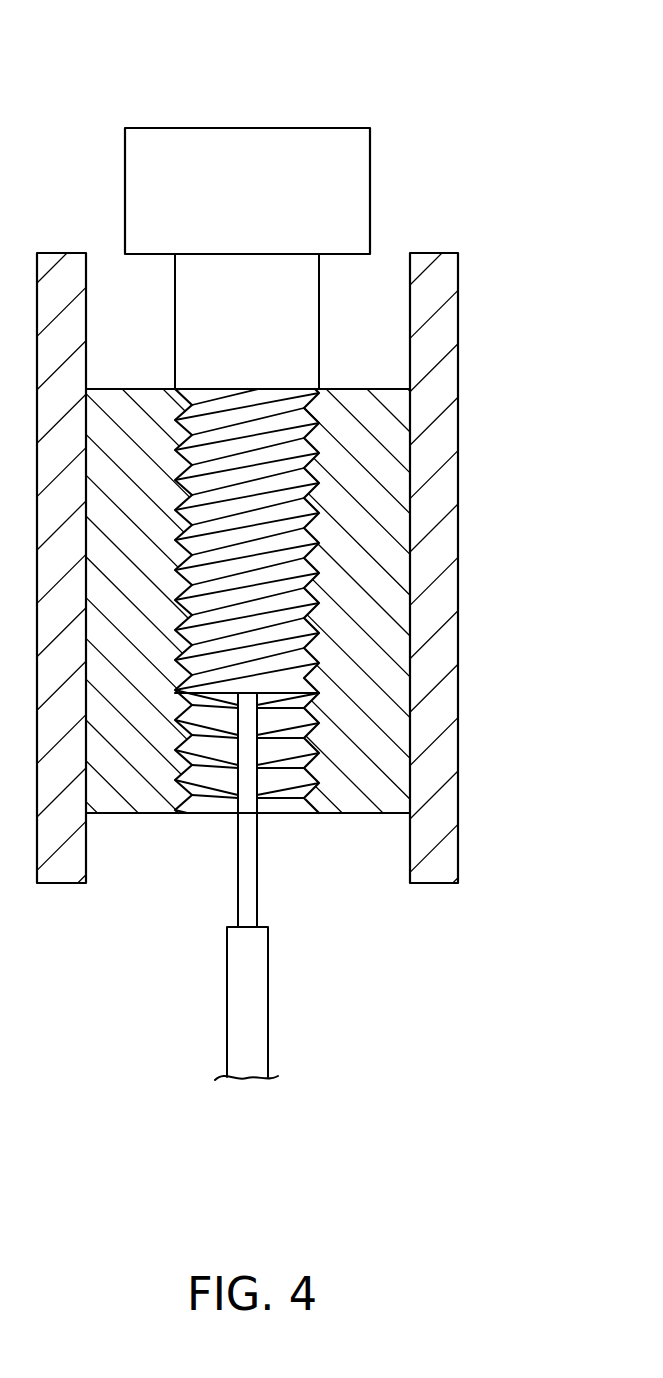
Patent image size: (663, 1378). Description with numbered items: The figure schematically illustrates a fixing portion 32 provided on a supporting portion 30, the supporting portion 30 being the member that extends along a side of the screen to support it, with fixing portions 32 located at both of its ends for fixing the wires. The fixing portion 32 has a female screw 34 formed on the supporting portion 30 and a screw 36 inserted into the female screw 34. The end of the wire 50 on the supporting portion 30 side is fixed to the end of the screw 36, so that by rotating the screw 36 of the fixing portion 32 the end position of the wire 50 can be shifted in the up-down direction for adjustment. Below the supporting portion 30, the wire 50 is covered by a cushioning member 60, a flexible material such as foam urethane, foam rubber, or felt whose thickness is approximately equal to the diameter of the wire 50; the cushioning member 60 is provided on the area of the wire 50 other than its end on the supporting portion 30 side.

The fixing portion 32 is at (300, 450).
The screw 36 is at (298, 142).
The supporting portion 30 is at (443, 335).
The female screw 34 is at (352, 812).
The wire 50 is at (247, 912).
The cushioning member 60 is at (252, 1002).